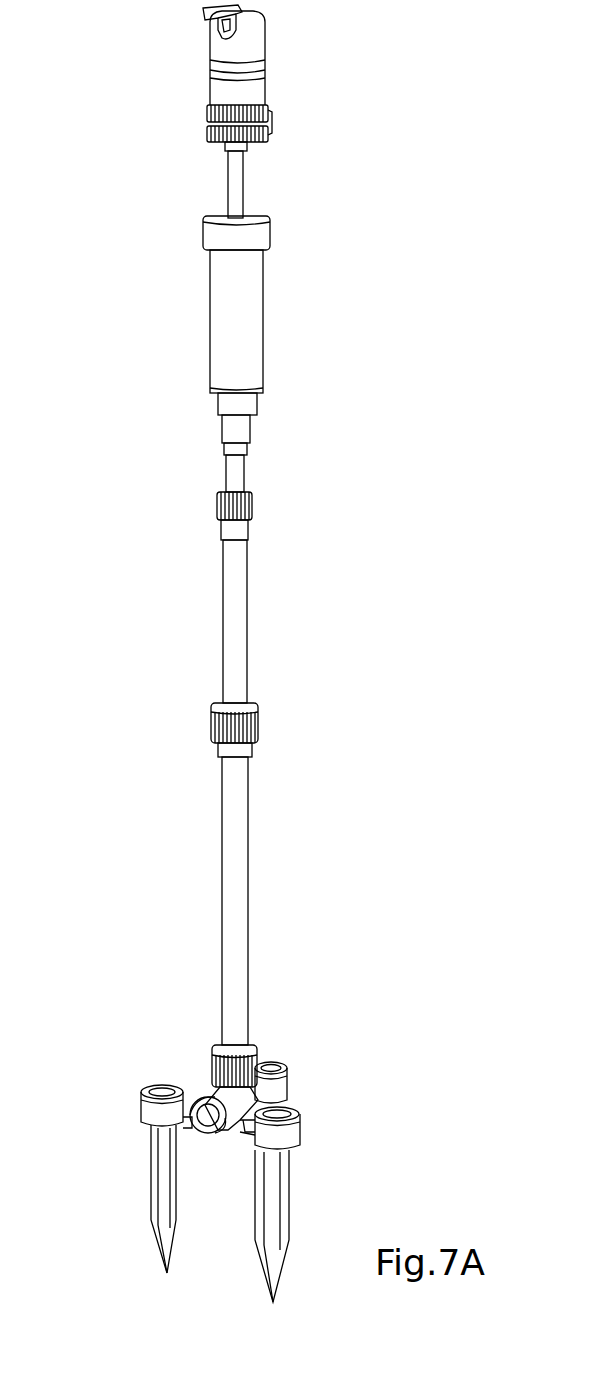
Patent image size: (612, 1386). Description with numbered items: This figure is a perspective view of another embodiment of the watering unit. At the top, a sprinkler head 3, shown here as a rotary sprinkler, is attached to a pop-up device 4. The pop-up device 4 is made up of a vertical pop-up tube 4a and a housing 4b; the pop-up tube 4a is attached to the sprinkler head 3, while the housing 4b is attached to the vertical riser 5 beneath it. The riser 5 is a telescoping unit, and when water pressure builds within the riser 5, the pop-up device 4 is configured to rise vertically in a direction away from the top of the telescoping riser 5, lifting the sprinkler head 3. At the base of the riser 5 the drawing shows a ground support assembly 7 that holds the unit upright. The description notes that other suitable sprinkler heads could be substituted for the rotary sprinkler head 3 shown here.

The sprinkler head 3 is at (266, 82).
The pop-up device 4 is at (197, 448).
The pop-up tube 4a is at (241, 180).
The housing 4b is at (263, 312).
The riser 5 is at (267, 494).
The ground spike base 7 is at (125, 1082).